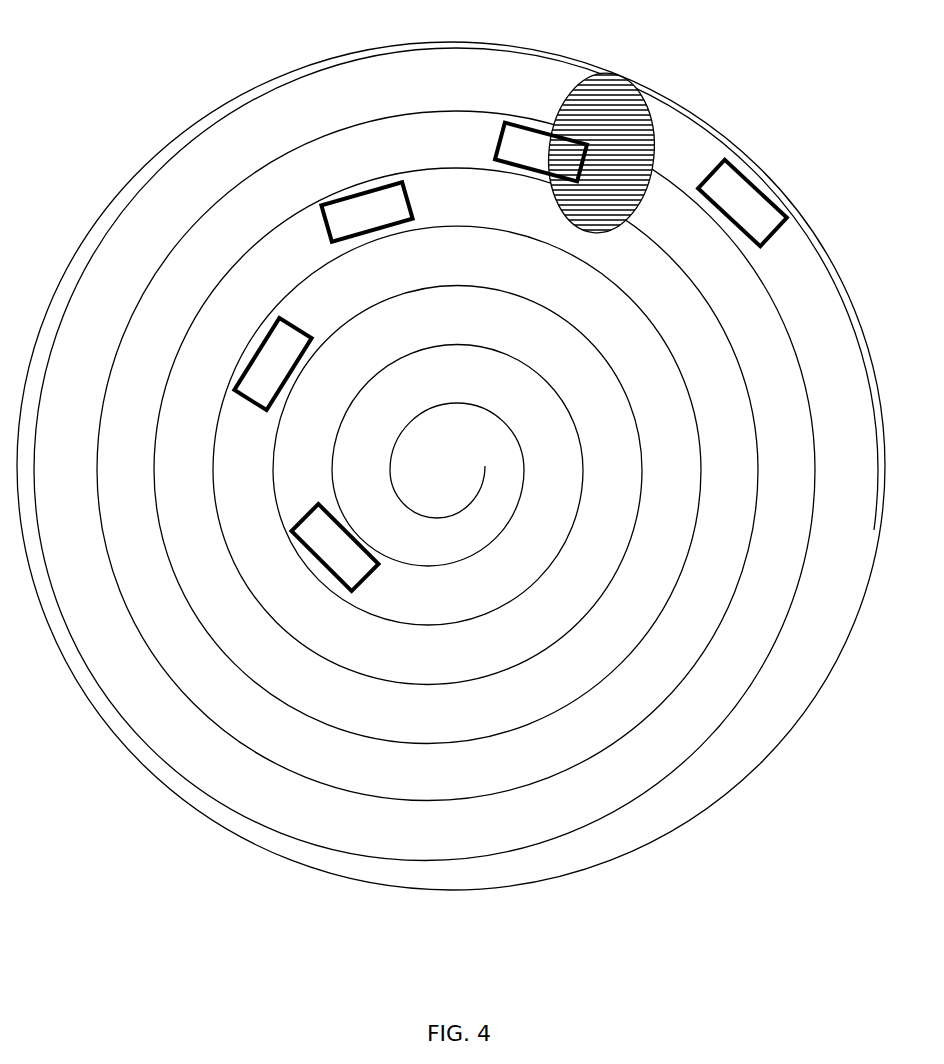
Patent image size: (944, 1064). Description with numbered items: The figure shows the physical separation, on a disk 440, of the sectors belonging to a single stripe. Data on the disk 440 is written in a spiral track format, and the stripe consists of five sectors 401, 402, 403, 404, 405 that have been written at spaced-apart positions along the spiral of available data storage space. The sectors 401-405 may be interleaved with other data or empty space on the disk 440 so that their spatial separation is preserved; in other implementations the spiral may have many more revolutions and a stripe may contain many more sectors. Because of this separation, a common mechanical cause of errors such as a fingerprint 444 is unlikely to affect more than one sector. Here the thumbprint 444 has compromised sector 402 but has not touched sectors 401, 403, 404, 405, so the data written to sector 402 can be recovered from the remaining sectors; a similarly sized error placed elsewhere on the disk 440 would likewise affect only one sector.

The disk 440 is at (200, 103).
The fingerprint 444 is at (612, 75).
The sector 401 is at (734, 160).
The sector 402 is at (507, 122).
The sector 403 is at (360, 190).
The sector 404 is at (284, 384).
The sector 405 is at (321, 506).